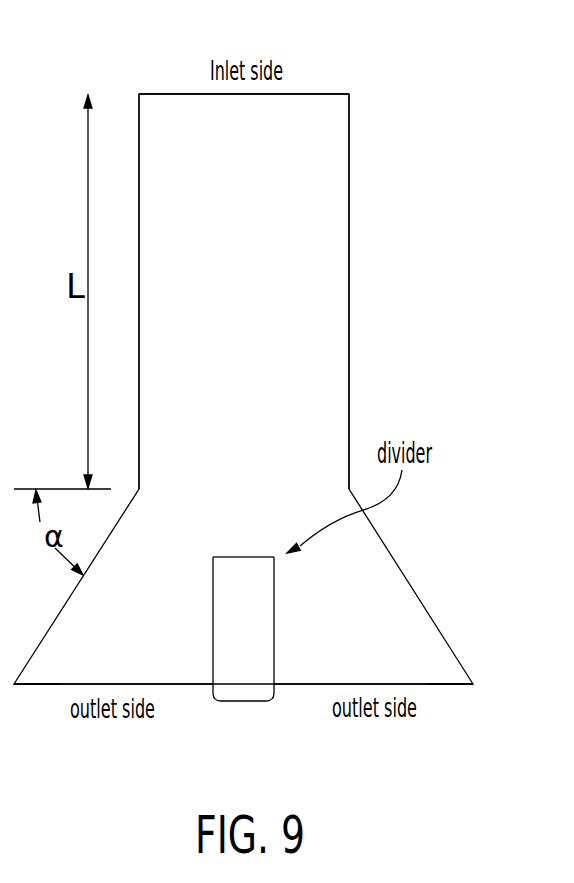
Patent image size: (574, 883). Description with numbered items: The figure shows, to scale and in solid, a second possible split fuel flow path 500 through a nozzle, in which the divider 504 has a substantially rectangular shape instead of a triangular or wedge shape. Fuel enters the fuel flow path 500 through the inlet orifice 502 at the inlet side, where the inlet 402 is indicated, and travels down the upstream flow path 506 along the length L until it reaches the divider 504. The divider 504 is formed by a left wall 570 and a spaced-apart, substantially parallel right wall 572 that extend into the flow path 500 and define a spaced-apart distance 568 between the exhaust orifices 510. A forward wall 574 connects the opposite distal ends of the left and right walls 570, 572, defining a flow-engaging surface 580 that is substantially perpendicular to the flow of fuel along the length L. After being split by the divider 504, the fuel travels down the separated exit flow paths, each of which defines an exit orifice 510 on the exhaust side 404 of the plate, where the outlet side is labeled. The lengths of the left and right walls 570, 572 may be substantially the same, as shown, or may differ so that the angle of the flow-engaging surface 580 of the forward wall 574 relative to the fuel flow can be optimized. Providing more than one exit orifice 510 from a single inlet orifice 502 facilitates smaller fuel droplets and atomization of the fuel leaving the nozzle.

The fuel flow path 500 is at (382, 308).
The inlet orifice 502 is at (170, 93).
The inlet 402 is at (316, 78).
The upstream flow path 506 is at (261, 358).
The exhaust side 404 is at (323, 683).
The exit orifice 510 is at (180, 684).
The divider 504 is at (232, 720).
The left wall 570 is at (213, 625).
The right wall 572 is at (274, 627).
The flow-engaging surface 580 is at (223, 553).
The forward wall 574 is at (248, 553).
The spaced-apart distance 568 is at (252, 702).